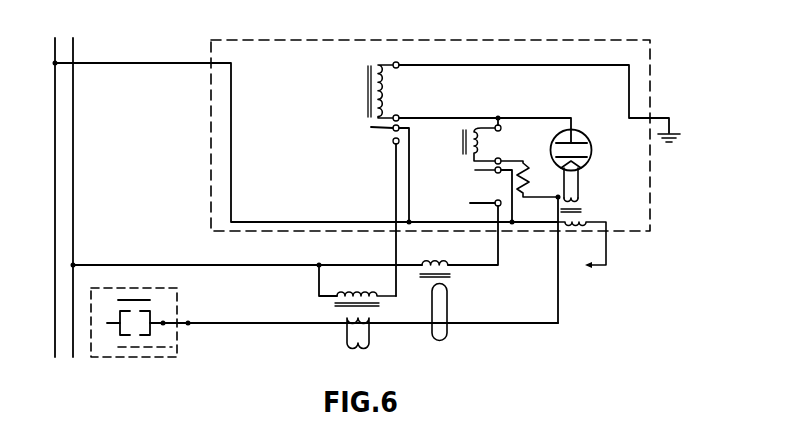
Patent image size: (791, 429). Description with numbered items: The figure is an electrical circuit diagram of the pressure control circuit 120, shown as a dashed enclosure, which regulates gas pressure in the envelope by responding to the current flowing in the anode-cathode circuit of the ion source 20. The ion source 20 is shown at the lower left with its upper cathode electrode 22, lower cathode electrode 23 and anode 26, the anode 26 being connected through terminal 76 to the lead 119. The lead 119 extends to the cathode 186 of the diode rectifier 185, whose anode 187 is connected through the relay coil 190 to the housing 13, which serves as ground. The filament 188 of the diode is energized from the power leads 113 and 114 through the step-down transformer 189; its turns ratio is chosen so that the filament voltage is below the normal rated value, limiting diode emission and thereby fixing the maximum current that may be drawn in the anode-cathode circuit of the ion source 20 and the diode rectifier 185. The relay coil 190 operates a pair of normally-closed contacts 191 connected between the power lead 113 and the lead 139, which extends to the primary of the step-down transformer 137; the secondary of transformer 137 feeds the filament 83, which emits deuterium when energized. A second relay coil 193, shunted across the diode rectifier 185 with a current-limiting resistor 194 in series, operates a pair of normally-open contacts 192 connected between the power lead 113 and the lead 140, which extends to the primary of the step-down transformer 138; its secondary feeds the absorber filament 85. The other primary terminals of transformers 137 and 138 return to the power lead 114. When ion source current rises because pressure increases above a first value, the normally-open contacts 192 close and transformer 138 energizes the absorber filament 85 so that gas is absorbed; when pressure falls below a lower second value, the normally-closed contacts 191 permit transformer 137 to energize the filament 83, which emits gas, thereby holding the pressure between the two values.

The power lead 113 is at (55, 153).
The power lead 114 is at (75, 222).
The pressure control circuit 120 is at (483, 40).
The relay coil 190 is at (382, 104).
The normally-closed contacts 191 is at (379, 132).
The normally-open contacts 192 is at (475, 172).
The relay coil 193 is at (478, 142).
The current-limiting resistor 194 is at (527, 163).
The diode rectifier 185 is at (581, 135).
The cathode 186 is at (561, 168).
The anode 187 is at (587, 144).
The filament 188 is at (585, 159).
The step-down transformer 189 is at (581, 213).
The housing 13 is at (672, 131).
The lead 139 is at (396, 263).
The lead 140 is at (499, 237).
The step-down transformer 138 is at (452, 279).
The absorber filament 85 is at (447, 333).
The step-down transformer 137 is at (378, 306).
The filament 83 is at (364, 351).
The lead 119 is at (277, 323).
The terminal 76 is at (181, 320).
The ion source 20 is at (124, 325).
The upper cathode electrode 22 is at (146, 300).
The anode 26 is at (154, 331).
The lower cathode electrode 23 is at (132, 350).